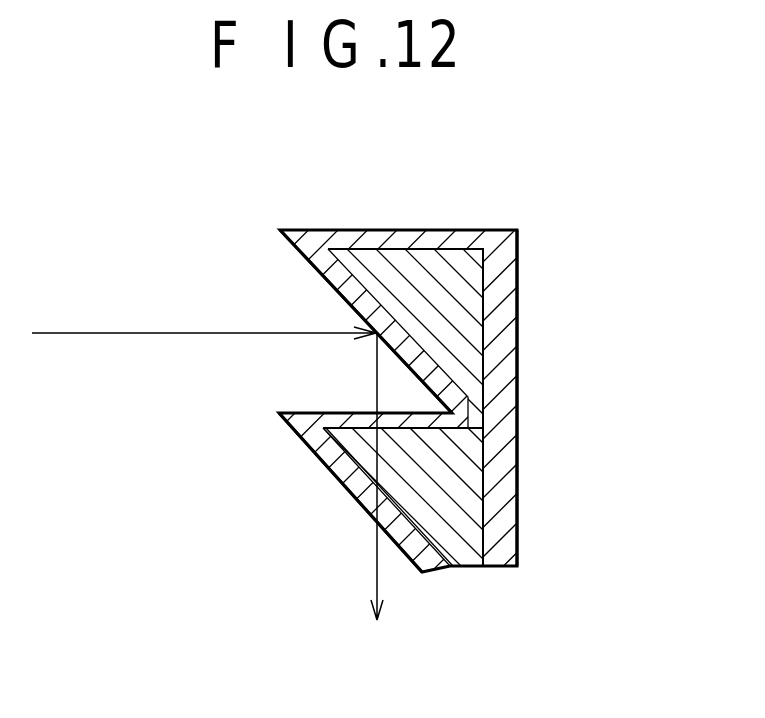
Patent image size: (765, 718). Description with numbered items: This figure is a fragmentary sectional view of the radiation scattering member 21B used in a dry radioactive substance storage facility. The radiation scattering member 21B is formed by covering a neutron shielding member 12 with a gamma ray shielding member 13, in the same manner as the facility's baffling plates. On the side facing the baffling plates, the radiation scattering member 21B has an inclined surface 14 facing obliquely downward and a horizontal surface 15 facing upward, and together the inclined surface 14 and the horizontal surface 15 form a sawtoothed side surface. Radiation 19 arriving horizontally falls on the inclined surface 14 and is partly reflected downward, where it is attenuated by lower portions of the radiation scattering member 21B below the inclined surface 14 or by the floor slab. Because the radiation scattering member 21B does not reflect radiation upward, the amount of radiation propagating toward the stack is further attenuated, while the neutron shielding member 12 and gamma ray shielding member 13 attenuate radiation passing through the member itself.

The neutron shielding member 12 is at (430, 288).
The gamma ray shielding member 13 is at (503, 318).
The inclined surface 14 is at (302, 245).
The horizontal surface 15 is at (308, 413).
The radiation 19 is at (85, 335).
The radiation scattering member 21B is at (517, 437).